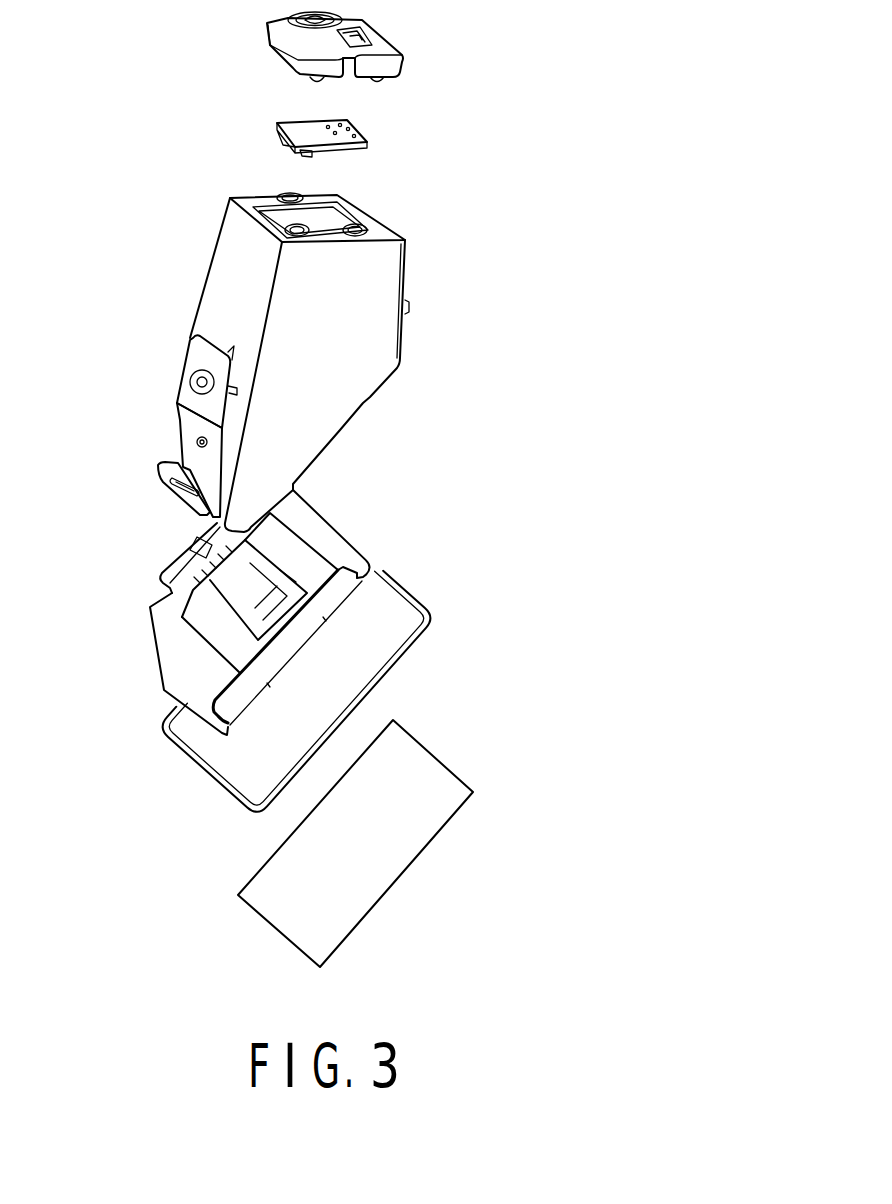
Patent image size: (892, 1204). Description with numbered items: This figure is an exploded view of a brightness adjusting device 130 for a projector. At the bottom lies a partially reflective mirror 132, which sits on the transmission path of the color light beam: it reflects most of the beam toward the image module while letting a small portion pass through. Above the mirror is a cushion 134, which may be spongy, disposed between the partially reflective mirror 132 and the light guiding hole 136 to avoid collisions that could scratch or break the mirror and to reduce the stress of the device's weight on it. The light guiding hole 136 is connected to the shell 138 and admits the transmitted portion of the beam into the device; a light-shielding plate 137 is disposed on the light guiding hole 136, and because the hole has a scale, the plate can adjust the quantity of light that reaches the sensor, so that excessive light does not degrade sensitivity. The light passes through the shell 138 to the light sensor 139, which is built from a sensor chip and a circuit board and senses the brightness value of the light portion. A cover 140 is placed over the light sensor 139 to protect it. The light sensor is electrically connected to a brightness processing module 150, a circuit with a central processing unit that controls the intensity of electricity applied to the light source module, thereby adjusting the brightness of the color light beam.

The brightness adjusting device 130 is at (124, 109).
The partially reflective mirror 132 is at (425, 797).
The cushion 134 is at (431, 621).
The light guiding hole 136 is at (332, 534).
The light-shielding plate 137 is at (290, 548).
The shell 138 is at (362, 315).
The light sensor 139 is at (370, 135).
The cover 140 is at (403, 55).
The brightness processing module 150 is at (401, 149).